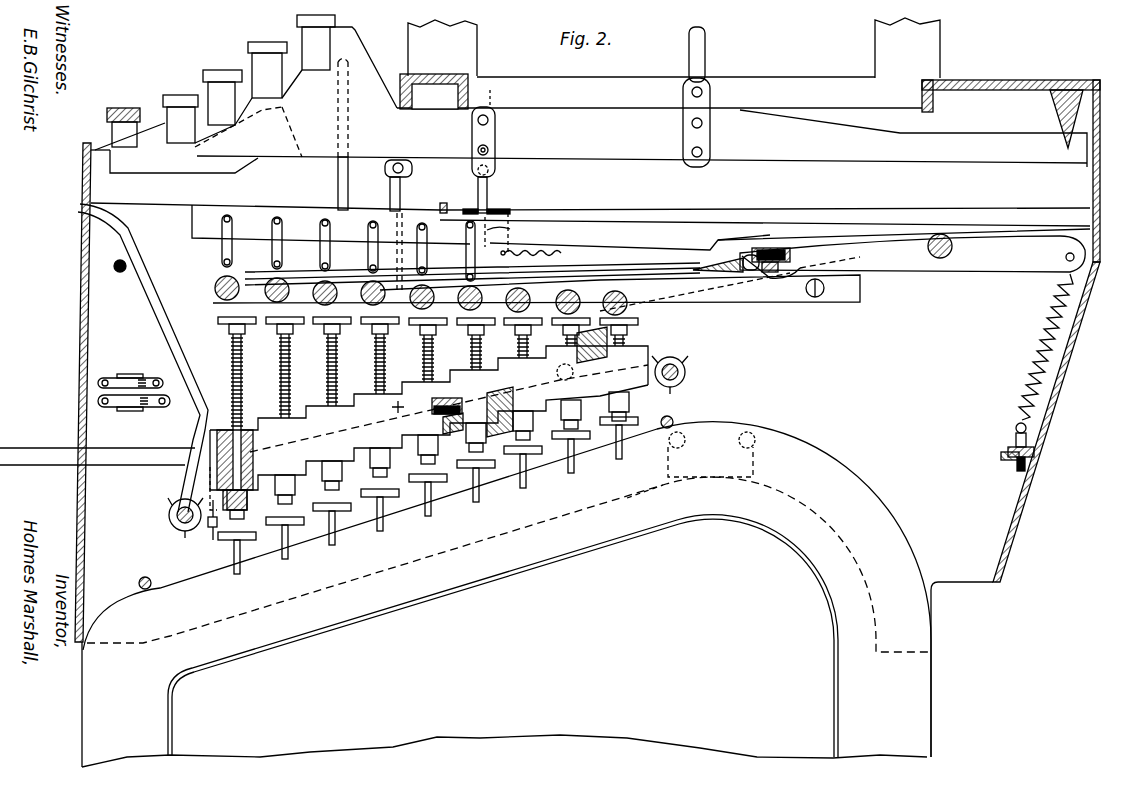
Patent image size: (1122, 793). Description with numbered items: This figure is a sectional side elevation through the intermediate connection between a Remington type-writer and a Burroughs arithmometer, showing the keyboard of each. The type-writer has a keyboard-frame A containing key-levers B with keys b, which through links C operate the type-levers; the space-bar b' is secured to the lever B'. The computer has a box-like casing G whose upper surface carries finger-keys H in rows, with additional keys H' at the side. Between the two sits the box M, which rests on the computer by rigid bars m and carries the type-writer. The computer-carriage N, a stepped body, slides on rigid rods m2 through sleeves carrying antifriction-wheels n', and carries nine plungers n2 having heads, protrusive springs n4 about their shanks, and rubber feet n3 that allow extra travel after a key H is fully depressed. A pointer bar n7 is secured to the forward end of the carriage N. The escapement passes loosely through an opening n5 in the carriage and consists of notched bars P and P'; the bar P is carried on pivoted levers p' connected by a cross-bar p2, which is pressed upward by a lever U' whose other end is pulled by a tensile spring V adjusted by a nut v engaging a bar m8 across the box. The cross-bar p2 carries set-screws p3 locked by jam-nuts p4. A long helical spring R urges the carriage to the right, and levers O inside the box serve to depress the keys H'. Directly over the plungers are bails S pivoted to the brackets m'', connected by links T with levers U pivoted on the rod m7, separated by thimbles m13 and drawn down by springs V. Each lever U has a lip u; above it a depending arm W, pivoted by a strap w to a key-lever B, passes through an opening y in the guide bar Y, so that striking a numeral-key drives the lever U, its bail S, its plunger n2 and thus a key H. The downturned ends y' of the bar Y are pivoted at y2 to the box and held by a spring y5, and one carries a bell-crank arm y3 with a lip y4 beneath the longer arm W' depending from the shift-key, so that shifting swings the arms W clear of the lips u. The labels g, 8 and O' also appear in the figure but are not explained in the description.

The keyboard-frame A is at (1093, 185).
The key-levers B is at (590, 114).
The lever B' is at (215, 94).
The keys b is at (180, 106).
The space-bar b' is at (123, 115).
The rod g is at (338, 177).
The depending arm W' is at (385, 225).
The depending arms W is at (495, 180).
The straps w is at (495, 133).
The section line 8 is at (485, 170).
The links C is at (707, 55).
The bar Y is at (505, 210).
The openings y is at (459, 192).
The links T is at (222, 250).
The bails S is at (214, 290).
The levers U is at (765, 235).
The lip u is at (505, 232).
The spring y5 is at (535, 250).
The arms y' is at (544, 260).
The lever U' is at (555, 284).
The brackets m'' is at (851, 313).
The pivoted levers p' is at (741, 221).
The set-screws p3 is at (770, 248).
The jam-nuts p4 is at (763, 272).
The cross-bar p2 is at (782, 265).
The rod m7 is at (938, 272).
The thimbles m13 is at (945, 235).
The springs V is at (1040, 340).
The bar m8 is at (1008, 447).
The nut v is at (1004, 461).
The box M is at (82, 356).
The pointer bar n7 is at (165, 340).
The helical spring R is at (108, 378).
The levers O is at (118, 434).
The computer-carriage N is at (429, 418).
The plungers n2 is at (230, 350).
The springs n4 is at (230, 390).
The rubber projection n3 is at (276, 505).
The finger-keys H is at (430, 481).
The notched bar P' is at (433, 398).
The notched bar P is at (426, 413).
The opening n5 is at (460, 392).
The lip y4 is at (405, 318).
The bell-crank arm y3 is at (452, 318).
The pivot y2 is at (500, 318).
The antifriction-wheels n' is at (419, 447).
The rigid rods m2 is at (176, 526).
The rigid bars m is at (423, 492).
The additional keys H' is at (203, 531).
The rod O' is at (195, 575).
The casing G is at (507, 589).